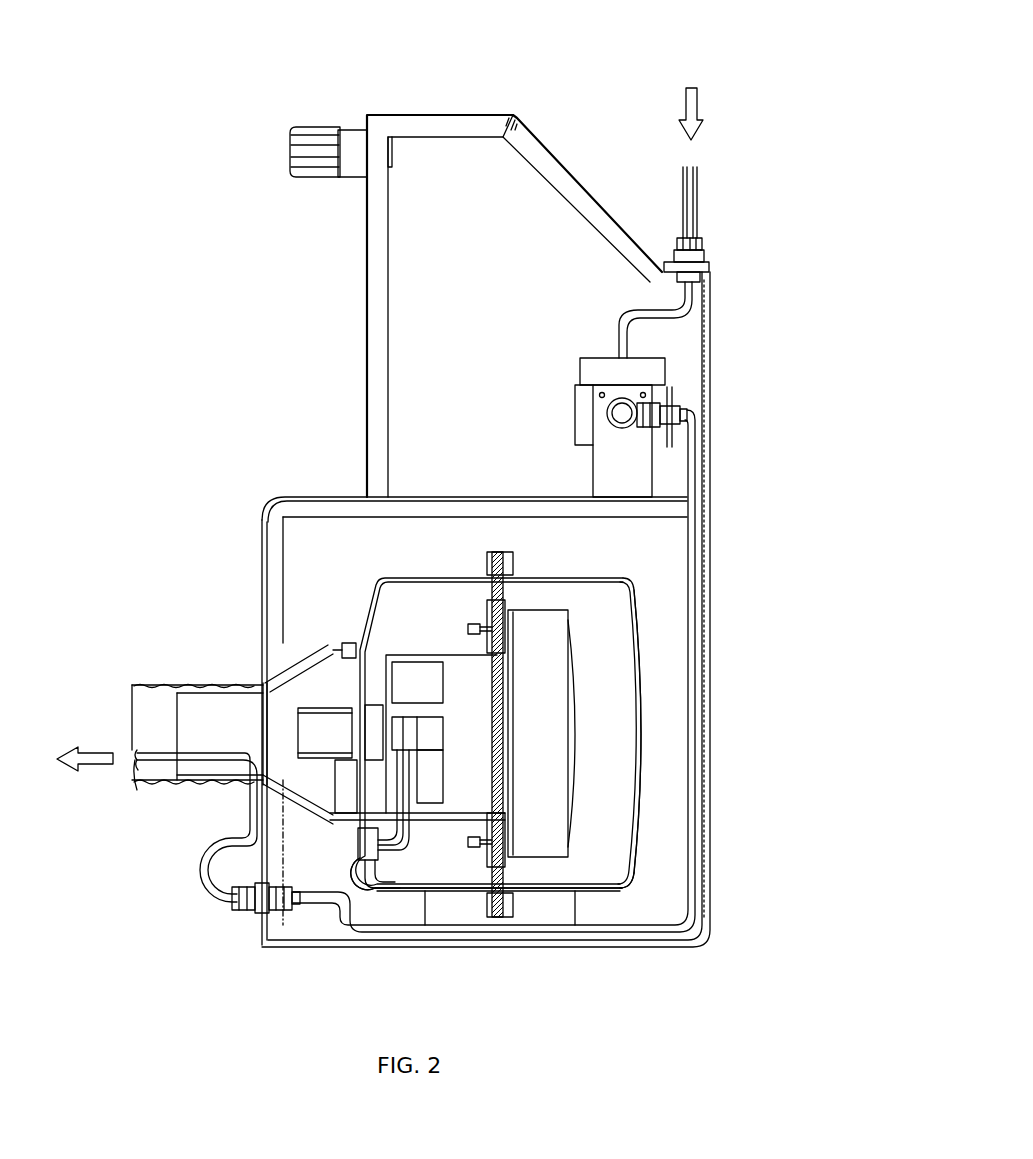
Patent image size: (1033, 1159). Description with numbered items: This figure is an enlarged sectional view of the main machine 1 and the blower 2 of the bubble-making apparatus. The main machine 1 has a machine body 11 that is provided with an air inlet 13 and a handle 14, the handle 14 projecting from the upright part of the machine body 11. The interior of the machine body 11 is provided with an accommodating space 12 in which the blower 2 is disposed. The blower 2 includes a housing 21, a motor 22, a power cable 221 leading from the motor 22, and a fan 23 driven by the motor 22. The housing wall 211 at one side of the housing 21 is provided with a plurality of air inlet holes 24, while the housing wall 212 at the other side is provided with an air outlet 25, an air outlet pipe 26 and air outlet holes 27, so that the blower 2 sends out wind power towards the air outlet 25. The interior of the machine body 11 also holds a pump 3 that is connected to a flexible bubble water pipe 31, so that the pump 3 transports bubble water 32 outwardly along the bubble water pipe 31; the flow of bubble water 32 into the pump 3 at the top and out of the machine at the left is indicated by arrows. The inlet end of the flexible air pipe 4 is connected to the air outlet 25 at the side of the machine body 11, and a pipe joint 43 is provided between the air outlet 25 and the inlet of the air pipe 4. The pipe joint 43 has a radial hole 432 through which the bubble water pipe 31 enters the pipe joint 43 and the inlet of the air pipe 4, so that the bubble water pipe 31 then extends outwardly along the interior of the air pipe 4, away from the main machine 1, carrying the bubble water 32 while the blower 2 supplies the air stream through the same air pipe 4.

The main machine 1 is at (400, 102).
The machine body 11 is at (365, 328).
The accommodating space 12 is at (637, 550).
The air inlet 13 is at (262, 586).
The handle 14 is at (288, 145).
The blower 2 is at (351, 598).
The housing 21 is at (545, 894).
The housing wall 211 is at (650, 877).
The housing wall 212 is at (385, 890).
The motor 22 is at (452, 813).
The power cable 221 is at (312, 885).
The fan 23 is at (557, 793).
The air inlet holes 24 is at (647, 682).
The air outlet 25 is at (207, 883).
The air outlet pipe 26 is at (312, 693).
The air outlet holes 27 is at (330, 683).
The pump 3 is at (576, 394).
The bubble water pipe 31 is at (685, 200).
The bubble water 32 is at (683, 100).
The air pipe 4 is at (156, 676).
The pipe joint 43 is at (210, 787).
The radial hole 432 is at (247, 782).